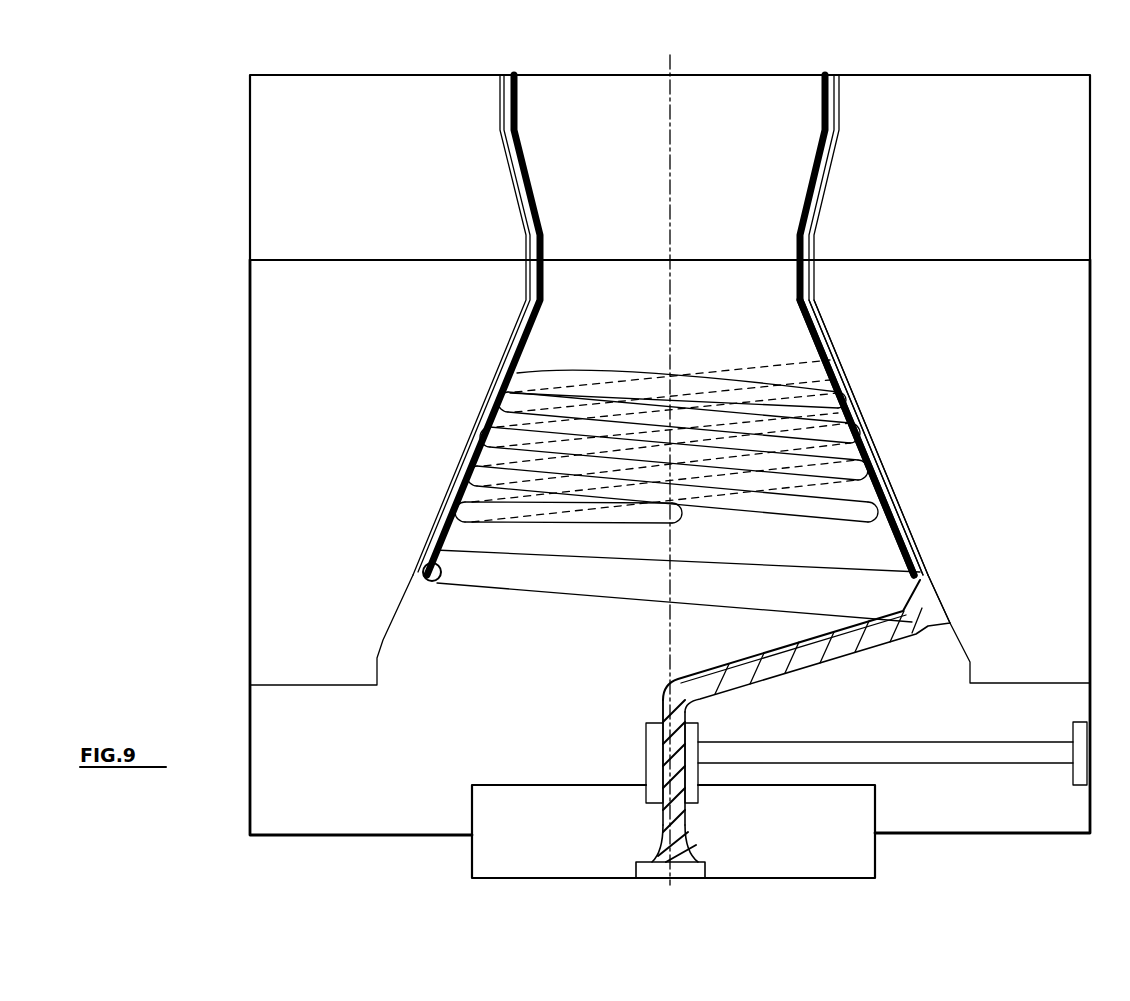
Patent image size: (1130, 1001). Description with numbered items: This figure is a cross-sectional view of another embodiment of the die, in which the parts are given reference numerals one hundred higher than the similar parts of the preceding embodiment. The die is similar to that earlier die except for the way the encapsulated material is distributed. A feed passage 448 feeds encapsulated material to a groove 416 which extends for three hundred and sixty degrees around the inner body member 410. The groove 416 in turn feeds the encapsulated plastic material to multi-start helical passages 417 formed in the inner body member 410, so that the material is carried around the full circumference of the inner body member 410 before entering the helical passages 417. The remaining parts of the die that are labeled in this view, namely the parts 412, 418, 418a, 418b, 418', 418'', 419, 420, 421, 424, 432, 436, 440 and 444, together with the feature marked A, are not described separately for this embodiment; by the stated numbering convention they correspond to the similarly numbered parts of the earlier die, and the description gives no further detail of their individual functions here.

The inner body member 410 is at (625, 280).
The housing lower portion 412 is at (360, 280).
The groove 416 is at (598, 598).
The multi-start helical passages 417 is at (627, 507).
The helical coil 418 is at (631, 435).
The coil end turns 418a is at (472, 445).
The coil wall portion 418b is at (530, 286).
The outer wall lower portion 418' is at (913, 461).
The wall right slanted portion 418'' is at (882, 437).
The inlet opening 419 is at (595, 100).
The right wall 420 is at (834, 75).
The housing upper portion 421 is at (352, 95).
The motor housing 424 is at (652, 842).
The bearing bushings 432 is at (695, 724).
The drive shaft 436 is at (688, 810).
The support rod 440 is at (970, 745).
The shaft upper end 444 is at (660, 722).
The feed passage 448 is at (785, 660).
The central axis A is at (690, 105).